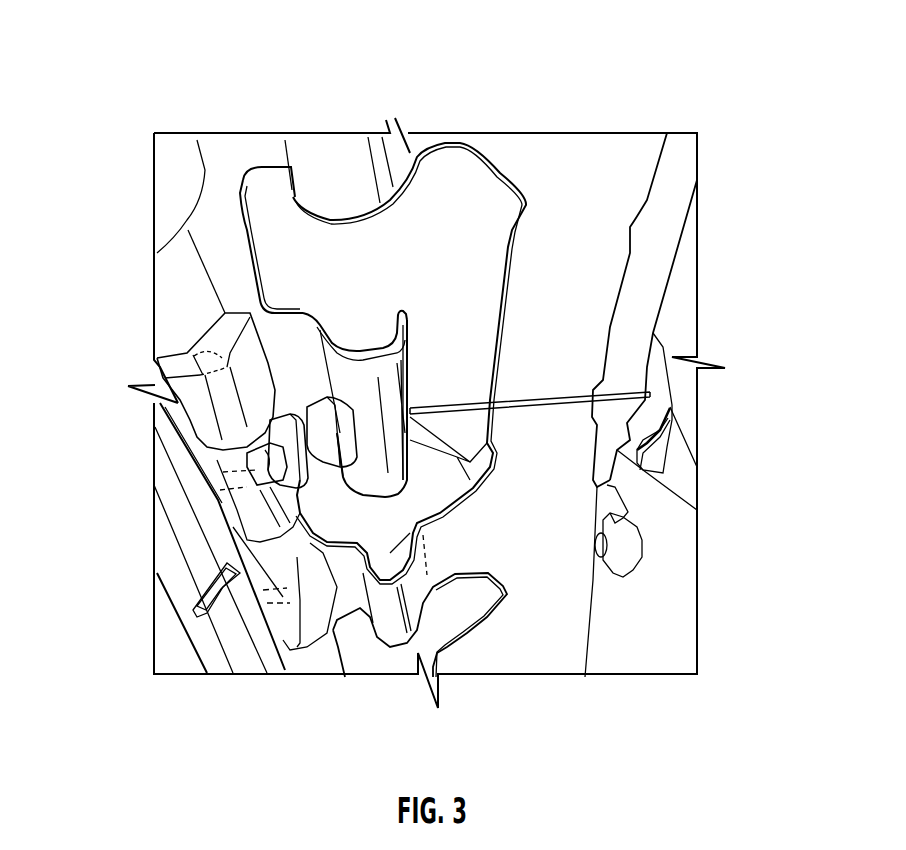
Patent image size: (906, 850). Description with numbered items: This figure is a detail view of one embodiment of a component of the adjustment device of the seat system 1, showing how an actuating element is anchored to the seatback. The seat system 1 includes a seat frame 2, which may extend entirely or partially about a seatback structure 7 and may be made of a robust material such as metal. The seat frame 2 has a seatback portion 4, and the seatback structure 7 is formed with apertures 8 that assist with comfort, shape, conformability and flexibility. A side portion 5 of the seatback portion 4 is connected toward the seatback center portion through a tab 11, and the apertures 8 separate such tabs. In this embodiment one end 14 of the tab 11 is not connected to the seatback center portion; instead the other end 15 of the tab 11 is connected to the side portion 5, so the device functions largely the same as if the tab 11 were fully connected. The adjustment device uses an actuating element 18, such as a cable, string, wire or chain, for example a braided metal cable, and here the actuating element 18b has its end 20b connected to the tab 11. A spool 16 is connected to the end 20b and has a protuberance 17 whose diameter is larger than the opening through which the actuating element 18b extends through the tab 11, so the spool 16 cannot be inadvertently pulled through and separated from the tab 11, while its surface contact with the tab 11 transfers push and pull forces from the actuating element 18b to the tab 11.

The seat system 1 is at (147, 98).
The seat frame 2 is at (648, 278).
The seatback portion 4 is at (575, 150).
The side portion 5 is at (287, 337).
The seatback structure 7 is at (180, 297).
The aperture 8 is at (273, 200).
The tab 11 is at (375, 397).
The end of the tab 14 is at (403, 307).
The other end of the tab 15 is at (332, 327).
The spool 16 is at (343, 470).
The protuberance 17 is at (308, 483).
The actuating element 18 is at (540, 436).
The actuating element 18b is at (542, 396).
The end of the actuating element 20b is at (247, 470).